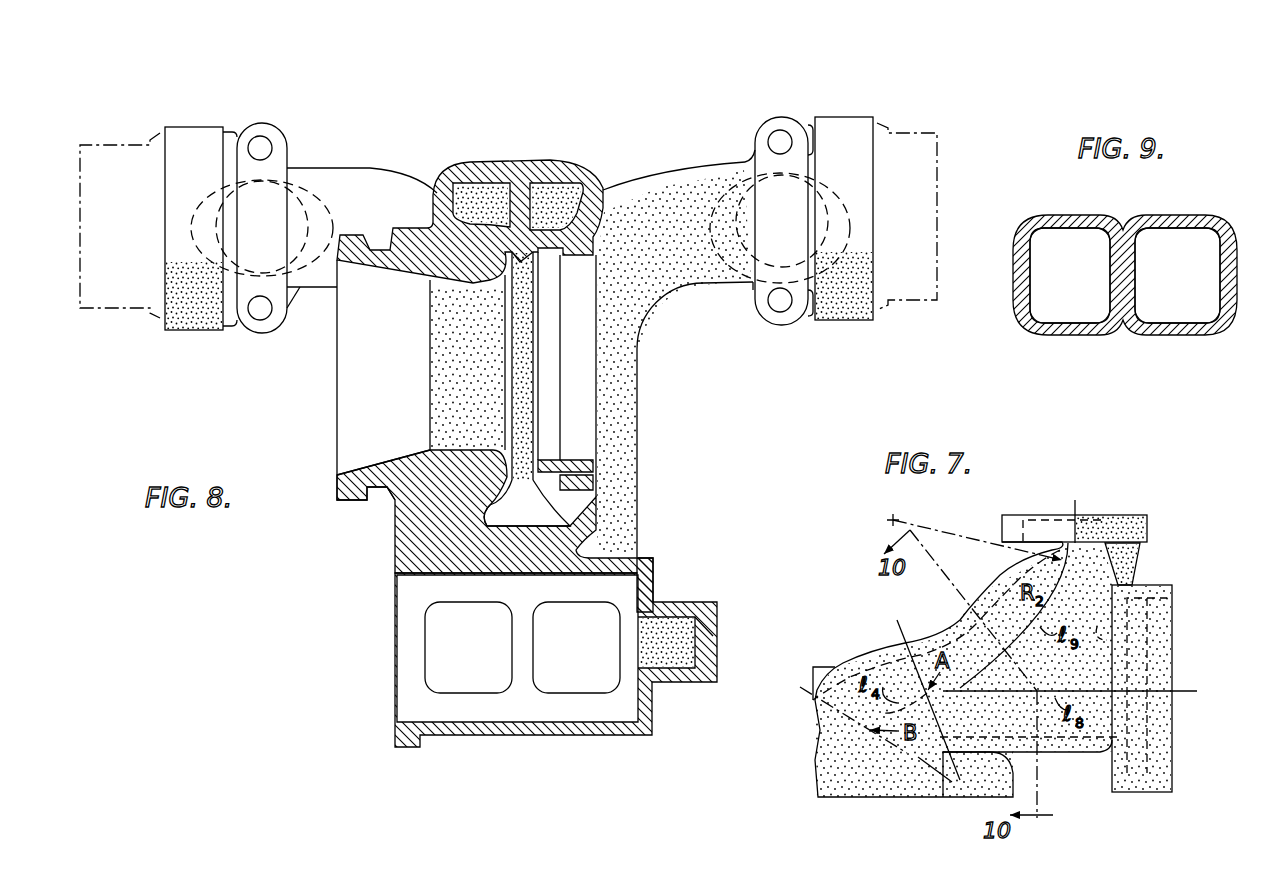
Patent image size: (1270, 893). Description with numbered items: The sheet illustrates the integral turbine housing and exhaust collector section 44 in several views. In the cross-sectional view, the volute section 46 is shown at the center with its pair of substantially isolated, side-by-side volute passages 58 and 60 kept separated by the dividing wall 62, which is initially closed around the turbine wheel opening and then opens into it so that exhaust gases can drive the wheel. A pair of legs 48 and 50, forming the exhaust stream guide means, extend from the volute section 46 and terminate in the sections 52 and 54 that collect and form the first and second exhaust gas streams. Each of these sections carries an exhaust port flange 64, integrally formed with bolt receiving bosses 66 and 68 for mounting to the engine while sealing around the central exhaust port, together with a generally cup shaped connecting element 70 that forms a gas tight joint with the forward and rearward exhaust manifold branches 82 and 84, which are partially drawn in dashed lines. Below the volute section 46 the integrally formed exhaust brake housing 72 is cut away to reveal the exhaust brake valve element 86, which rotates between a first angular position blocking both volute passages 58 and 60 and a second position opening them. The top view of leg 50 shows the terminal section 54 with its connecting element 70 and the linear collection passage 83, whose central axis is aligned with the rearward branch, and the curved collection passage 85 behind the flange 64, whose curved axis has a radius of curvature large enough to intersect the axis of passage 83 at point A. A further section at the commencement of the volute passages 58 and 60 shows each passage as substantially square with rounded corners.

In FIG. 8, the integral turbine housing and exhaust collector section 44 is at (514, 152).
In FIG. 8, the volute section 46 is at (527, 170).
In FIG. 8, the leg 48 is at (402, 187).
In FIG. 8, the leg 50 is at (632, 185).
In FIG. 7, the leg 50 is at (988, 592).
In FIG. 8, the terminal section 52 is at (288, 132).
In FIG. 8, the terminal section 54 is at (755, 120).
In FIG. 7, the terminal section 54 is at (1137, 567).
In FIG. 8, the volute passage 58 is at (562, 182).
In FIG. 9, the volute passage 58 is at (1213, 270).
In FIG. 8, the volute passage 60 is at (478, 187).
In FIG. 9, the volute passage 60 is at (1065, 237).
In FIG. 8, the dividing wall 62 is at (533, 220).
In FIG. 8, the exhaust port flange 64 is at (293, 160).
In FIG. 7, the exhaust port flange 64 is at (1147, 520).
In FIG. 8, the bolt receiving boss 66 is at (255, 128).
In FIG. 8, the bolt receiving boss 68 is at (270, 323).
In FIG. 8, the cup shaped connecting element 70 is at (190, 136).
In FIG. 7, the cup shaped connecting element 70 is at (1135, 792).
In FIG. 8, the exhaust brake housing 72 is at (650, 718).
In FIG. 8, the forward exhaust manifold branch 82 is at (106, 296).
In FIG. 8, the rearward exhaust manifold branch 84 is at (908, 298).
In FIG. 8, the exhaust brake valve element 86 is at (400, 680).
In FIG. 7, the collection passage 83 is at (1105, 705).
In FIG. 7, the curved collection passage 85 is at (1097, 545).